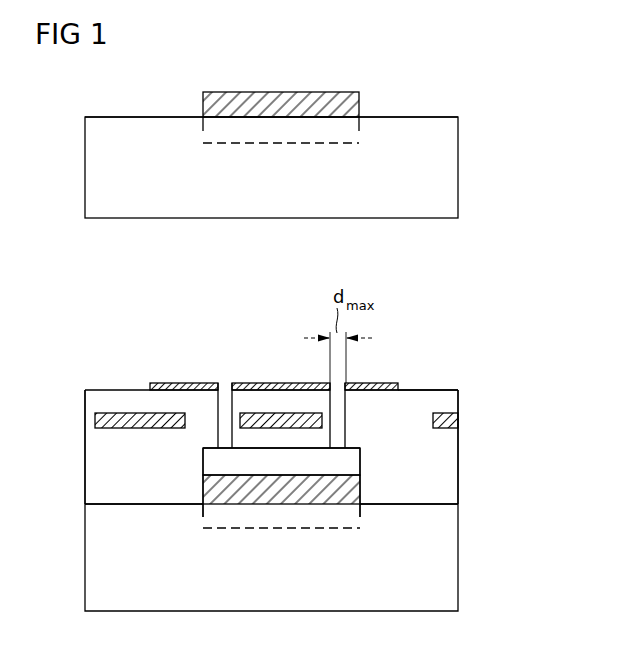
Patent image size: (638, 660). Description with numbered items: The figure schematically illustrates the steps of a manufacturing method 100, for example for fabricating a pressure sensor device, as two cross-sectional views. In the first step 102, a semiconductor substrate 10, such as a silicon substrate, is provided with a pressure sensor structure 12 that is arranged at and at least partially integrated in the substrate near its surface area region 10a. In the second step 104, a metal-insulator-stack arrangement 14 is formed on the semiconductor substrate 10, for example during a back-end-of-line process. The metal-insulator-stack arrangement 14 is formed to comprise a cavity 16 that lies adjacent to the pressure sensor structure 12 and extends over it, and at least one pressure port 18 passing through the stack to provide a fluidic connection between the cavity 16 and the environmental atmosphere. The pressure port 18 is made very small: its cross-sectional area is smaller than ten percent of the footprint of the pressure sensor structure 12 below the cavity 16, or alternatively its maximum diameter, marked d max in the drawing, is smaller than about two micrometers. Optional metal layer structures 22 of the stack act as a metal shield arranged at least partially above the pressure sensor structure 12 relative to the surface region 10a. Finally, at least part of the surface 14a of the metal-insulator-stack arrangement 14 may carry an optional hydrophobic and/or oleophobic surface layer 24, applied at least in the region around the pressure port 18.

The manufacturing method 100 is at (512, 37).
The method step 102 is at (53, 171).
The method step 104 is at (53, 510).
The semiconductor substrate 10 is at (458, 163).
The surface area region of the semiconductor substrate 10a is at (421, 112).
The pressure sensor structure 12 is at (333, 96).
The metal-insulator-stack arrangement 14 is at (575, 390).
The surface of the metal-insulator-stack arrangement 14a is at (454, 387).
The cavity 16 is at (213, 463).
The pressure port 18 is at (215, 403).
The metal layer structure 22 is at (122, 410).
The hydrophobic and/or oleophobic surface layer 24 is at (398, 376).